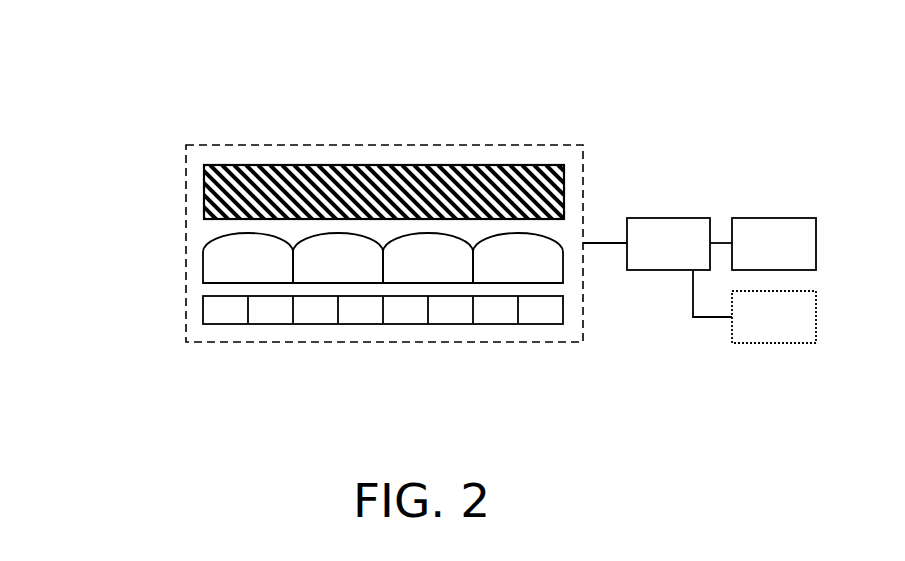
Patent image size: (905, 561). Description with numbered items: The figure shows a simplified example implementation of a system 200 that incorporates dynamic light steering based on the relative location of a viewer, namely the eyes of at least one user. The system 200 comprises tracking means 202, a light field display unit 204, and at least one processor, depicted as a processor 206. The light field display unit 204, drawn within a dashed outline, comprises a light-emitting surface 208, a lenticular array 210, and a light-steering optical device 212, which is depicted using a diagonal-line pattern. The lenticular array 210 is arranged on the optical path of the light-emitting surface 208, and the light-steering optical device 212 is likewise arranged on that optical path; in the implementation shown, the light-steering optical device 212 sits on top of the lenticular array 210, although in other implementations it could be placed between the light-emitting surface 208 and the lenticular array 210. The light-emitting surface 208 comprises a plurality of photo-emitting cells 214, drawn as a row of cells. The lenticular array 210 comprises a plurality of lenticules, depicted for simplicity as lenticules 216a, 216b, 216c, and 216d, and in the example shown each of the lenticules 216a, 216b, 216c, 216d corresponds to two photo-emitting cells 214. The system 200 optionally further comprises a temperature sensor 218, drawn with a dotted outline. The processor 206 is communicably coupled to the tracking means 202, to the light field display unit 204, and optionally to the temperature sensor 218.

The system 200 is at (108, 74).
The tracking means 202 is at (753, 256).
The light field display unit 204 is at (395, 205).
The processor 206 is at (647, 256).
The light-emitting surface 208 is at (310, 308).
The lenticular array 210 is at (310, 258).
The light-steering optical device 212 is at (346, 195).
The photo-emitting cells 214 is at (381, 372).
The lenticule 216a is at (219, 276).
The lenticule 216b is at (309, 276).
The lenticule 216c is at (399, 276).
The lenticule 216d is at (489, 276).
The temperature sensor 218 is at (753, 329).